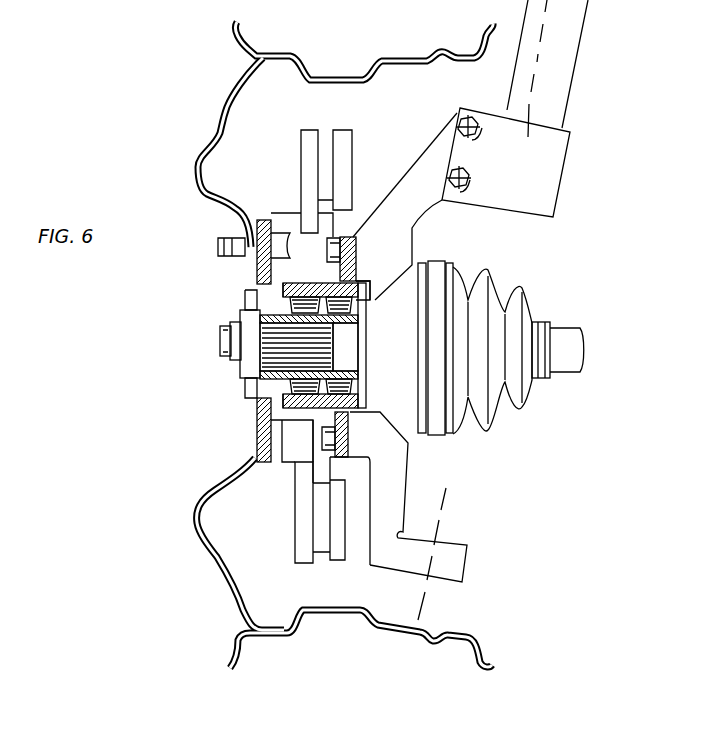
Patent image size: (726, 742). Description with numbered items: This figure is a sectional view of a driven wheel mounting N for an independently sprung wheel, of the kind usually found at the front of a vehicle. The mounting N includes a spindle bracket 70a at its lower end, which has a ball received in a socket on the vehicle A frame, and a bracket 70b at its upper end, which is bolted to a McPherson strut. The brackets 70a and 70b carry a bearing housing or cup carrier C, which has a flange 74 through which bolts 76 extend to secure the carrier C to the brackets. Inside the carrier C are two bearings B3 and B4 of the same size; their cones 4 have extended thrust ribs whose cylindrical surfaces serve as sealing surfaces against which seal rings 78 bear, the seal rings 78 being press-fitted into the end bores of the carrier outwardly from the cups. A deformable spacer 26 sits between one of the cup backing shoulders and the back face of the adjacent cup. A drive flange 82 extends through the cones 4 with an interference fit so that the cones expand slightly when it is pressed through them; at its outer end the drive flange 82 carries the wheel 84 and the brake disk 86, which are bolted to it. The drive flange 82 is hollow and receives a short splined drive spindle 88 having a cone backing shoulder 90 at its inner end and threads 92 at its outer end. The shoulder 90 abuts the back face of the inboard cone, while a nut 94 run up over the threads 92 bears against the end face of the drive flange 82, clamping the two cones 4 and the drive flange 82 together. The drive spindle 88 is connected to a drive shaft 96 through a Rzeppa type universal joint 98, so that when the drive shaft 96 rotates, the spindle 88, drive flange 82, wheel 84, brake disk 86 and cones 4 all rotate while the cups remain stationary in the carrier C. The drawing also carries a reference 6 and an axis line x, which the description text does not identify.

The wheel 84 is at (230, 106).
The brake disk 86 is at (306, 163).
The flange 74 is at (352, 237).
The bolts 76 is at (338, 238).
The seal rings 78 is at (283, 303).
The cones 4 is at (358, 330).
The bearing housing 6 is at (320, 292).
The bearing B3 is at (366, 402).
The bearing B4 is at (272, 394).
The drive flange 82 is at (335, 370).
The cone backing shoulder 90 is at (356, 351).
The drive spindle 88 is at (258, 366).
The threads 92 is at (222, 334).
The nut 94 is at (228, 355).
The deformable spacer 26 is at (314, 438).
The cup carrier C is at (309, 422).
The mounting N is at (148, 403).
The spindle bracket 70a is at (390, 560).
The bracket 70b is at (430, 208).
The steering axis x is at (440, 512).
The drive shaft 96 is at (568, 372).
The Rzeppa type universal joint 98 is at (500, 416).